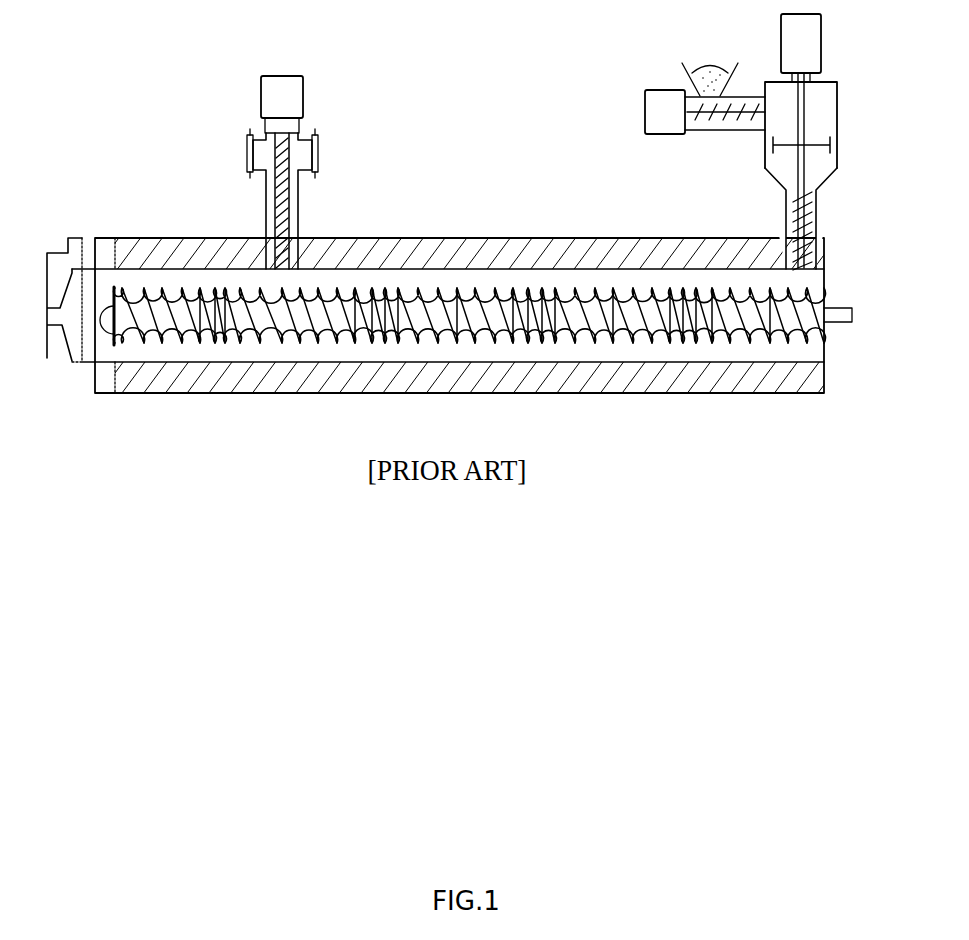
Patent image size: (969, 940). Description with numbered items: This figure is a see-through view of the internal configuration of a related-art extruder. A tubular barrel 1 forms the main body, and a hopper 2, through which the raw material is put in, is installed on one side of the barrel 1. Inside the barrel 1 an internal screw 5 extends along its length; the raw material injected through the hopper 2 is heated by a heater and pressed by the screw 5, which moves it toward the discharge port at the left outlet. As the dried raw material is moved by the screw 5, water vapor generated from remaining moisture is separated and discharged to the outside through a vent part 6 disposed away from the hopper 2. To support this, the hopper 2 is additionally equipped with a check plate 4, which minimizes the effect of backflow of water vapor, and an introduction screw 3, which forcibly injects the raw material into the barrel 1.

The tubular barrel 1 is at (471, 255).
The hopper 2 is at (838, 98).
The introduction screw 3 is at (806, 207).
The check plate 4 is at (817, 148).
The internal screw 5 is at (594, 323).
The vent part 6 is at (296, 210).